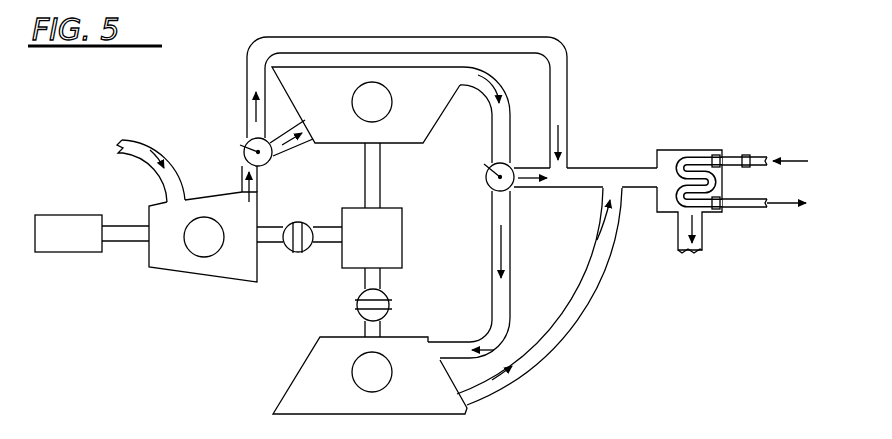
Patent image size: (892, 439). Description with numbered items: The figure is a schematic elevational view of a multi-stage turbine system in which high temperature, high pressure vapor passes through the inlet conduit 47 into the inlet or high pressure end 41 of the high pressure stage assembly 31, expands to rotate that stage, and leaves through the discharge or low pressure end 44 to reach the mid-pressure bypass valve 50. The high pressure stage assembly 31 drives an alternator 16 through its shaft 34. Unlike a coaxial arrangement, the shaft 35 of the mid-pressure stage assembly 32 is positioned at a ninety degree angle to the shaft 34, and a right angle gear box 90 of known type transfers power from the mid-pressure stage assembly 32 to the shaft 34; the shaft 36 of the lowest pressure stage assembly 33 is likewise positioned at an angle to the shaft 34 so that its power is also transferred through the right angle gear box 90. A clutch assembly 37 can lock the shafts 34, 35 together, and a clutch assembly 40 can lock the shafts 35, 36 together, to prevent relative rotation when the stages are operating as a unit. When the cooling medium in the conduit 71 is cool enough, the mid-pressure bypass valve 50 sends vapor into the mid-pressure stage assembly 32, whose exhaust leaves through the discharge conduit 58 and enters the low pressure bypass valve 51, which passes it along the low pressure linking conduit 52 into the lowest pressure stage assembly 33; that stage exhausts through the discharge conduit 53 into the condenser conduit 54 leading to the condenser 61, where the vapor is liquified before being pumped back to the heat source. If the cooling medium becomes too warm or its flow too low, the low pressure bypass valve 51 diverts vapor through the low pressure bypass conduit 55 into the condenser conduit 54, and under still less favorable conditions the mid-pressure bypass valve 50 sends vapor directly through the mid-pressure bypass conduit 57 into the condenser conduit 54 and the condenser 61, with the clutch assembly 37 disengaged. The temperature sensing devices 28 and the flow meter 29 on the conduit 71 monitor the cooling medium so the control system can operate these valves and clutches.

The alternator 16 is at (64, 214).
The temperature sensing device 28 is at (715, 155).
The flow meter 29 is at (746, 155).
The high pressure stage assembly 31 is at (176, 276).
The mid-pressure stage assembly 32 is at (437, 132).
The lowest pressure stage assembly 33 is at (414, 337).
The shaft 34 is at (270, 246).
The shaft 35 is at (379, 204).
The shaft 36 is at (378, 327).
The clutch assembly 37 is at (297, 222).
The clutch assembly 40 is at (356, 311).
The inlet or high pressure end 41 is at (148, 207).
The discharge or low pressure end 44 is at (260, 192).
The inlet conduit 47 is at (160, 150).
The mid-pressure bypass valve 50 is at (244, 146).
The low pressure bypass valve 51 is at (486, 180).
The low pressure linking conduit 52 is at (507, 250).
The discharge conduit 53 is at (575, 302).
The condenser conduit 54 is at (607, 168).
The low pressure bypass conduit 55 is at (516, 168).
The mid-pressure bypass conduit 57 is at (346, 37).
The discharge conduit 58 is at (506, 116).
The condenser 61 is at (660, 150).
The conduit 71 is at (766, 158).
The right angle gear box 90 is at (403, 222).